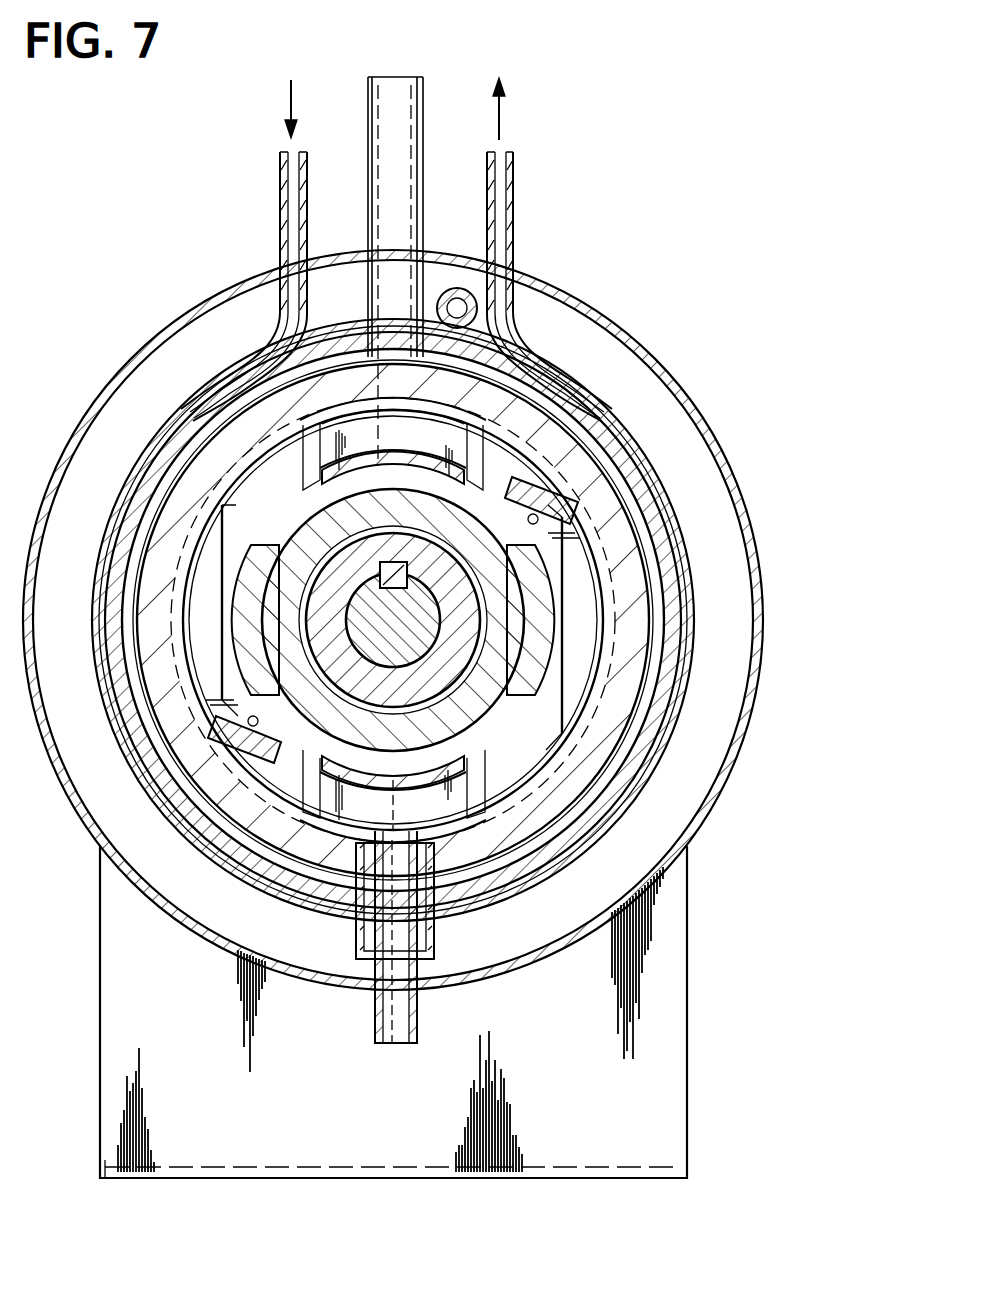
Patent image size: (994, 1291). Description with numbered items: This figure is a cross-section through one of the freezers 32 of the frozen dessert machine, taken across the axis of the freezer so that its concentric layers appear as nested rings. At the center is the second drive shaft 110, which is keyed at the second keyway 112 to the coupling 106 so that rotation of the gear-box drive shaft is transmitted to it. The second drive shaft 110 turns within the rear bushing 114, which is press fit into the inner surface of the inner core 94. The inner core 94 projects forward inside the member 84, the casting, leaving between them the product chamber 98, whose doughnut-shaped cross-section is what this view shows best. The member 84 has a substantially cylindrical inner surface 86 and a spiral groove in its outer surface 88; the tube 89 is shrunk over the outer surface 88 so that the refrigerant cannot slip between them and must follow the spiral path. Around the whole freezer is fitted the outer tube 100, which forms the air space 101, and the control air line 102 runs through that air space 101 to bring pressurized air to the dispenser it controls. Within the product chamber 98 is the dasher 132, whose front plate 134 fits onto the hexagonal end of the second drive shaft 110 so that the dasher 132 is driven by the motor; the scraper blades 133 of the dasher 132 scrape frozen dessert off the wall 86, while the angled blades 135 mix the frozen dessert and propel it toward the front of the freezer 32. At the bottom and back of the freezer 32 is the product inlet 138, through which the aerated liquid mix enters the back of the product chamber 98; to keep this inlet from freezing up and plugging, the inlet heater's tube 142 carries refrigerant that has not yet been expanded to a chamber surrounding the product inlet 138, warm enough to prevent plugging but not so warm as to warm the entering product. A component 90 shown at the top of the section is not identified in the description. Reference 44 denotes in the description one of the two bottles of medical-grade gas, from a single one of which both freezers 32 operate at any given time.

The freezer 32 is at (778, 621).
The bottle of gas 44 is at (436, 948).
The member 84 is at (232, 755).
The cylindrical inner surface 86 is at (195, 648).
The outer surface 88 is at (612, 420).
The tube 89 is at (625, 468).
The tube 90 is at (368, 252).
The inner core 94 is at (318, 705).
The product chamber 98 is at (190, 596).
The outer tube 100 is at (735, 468).
The air space 101 is at (725, 541).
The control air line 102 is at (457, 287).
The coupling 106 is at (428, 680).
The second drive shaft 110 is at (430, 640).
The second keyway 112 is at (390, 572).
The rear bushing 114 is at (275, 557).
The dasher 132 is at (285, 505).
The scraper blades 133 is at (535, 478).
The front plate 134 is at (553, 552).
The angled blades 135 is at (466, 441).
The product inlet 138 is at (400, 1046).
The tube 142 is at (279, 181).